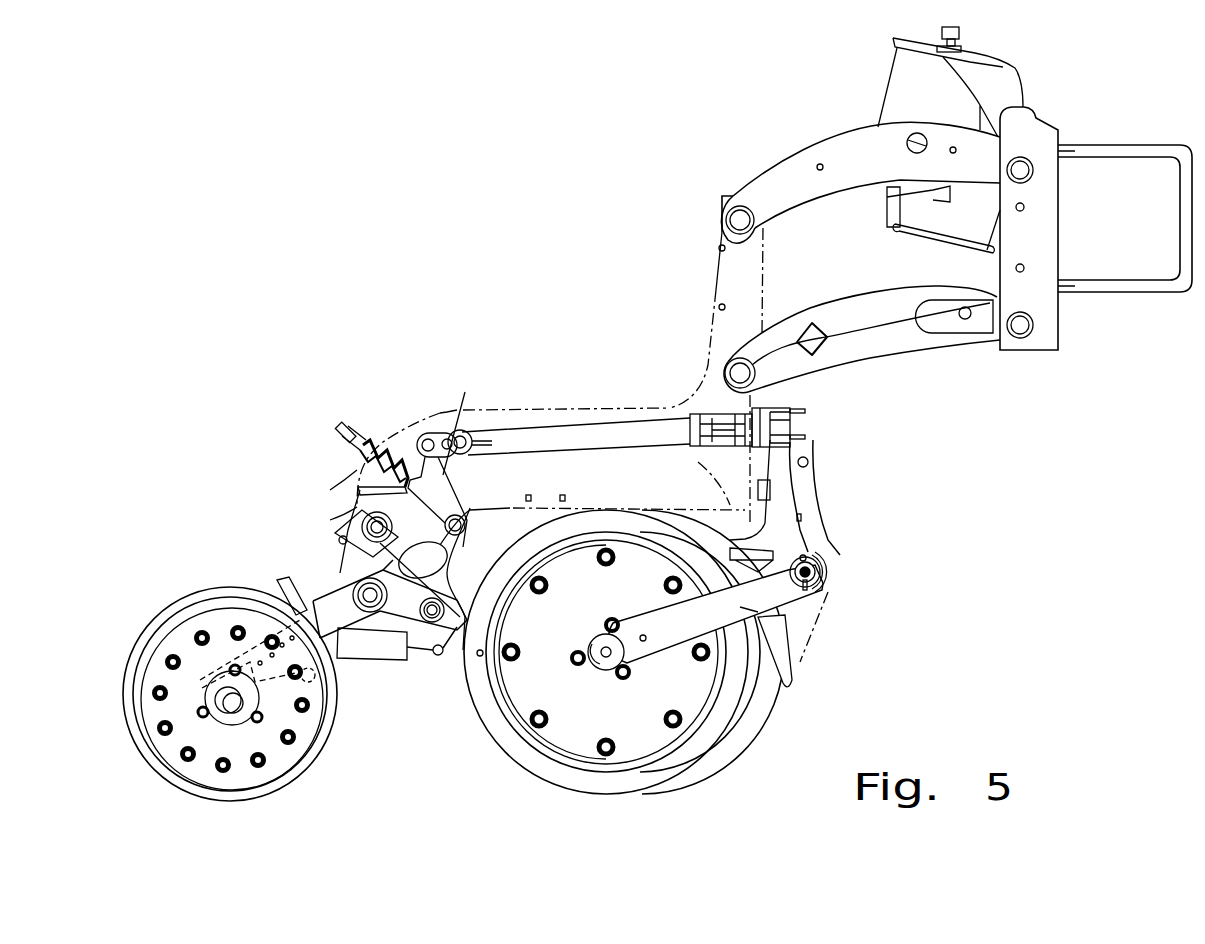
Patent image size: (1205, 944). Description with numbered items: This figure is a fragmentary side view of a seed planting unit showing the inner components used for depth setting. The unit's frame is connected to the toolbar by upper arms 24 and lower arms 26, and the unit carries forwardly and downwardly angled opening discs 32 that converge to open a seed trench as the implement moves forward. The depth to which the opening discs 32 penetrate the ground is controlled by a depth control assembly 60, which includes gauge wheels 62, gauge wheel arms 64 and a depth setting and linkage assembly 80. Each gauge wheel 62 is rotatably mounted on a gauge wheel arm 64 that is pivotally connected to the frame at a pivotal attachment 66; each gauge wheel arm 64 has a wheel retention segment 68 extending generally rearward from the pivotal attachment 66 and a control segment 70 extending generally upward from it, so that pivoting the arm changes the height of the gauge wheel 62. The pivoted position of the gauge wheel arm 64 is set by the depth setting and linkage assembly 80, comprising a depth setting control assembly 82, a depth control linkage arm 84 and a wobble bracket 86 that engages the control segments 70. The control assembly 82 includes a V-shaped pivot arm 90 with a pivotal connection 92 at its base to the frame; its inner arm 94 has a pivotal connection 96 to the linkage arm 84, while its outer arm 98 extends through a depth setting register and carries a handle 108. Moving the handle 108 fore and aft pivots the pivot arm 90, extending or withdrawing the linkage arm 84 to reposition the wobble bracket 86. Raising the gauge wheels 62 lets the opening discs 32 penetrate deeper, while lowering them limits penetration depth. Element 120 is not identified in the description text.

The upper arms 24 is at (835, 147).
The lower arms 26 is at (903, 343).
The opening discs 32 is at (750, 710).
The depth control assembly 60 is at (837, 638).
The gauge wheels 62 is at (687, 753).
The gauge wheel arms 64 is at (713, 522).
The pivotal attachment 66 is at (823, 570).
The wheel retention segment 68 is at (743, 608).
The control segment 70 is at (790, 489).
The depth setting and linkage assembly 80 is at (440, 405).
The depth setting control assembly 82 is at (338, 461).
The depth control linkage arm 84 is at (540, 435).
The wobble bracket 86 is at (810, 407).
The pivot arm 90 is at (447, 488).
The pivotal connection 92 is at (358, 573).
The inner arm 94 is at (465, 392).
The pivotal connection 96 is at (416, 440).
The outer arm 98 is at (361, 522).
The handle 108 is at (340, 430).
The spring seat 120 is at (356, 491).